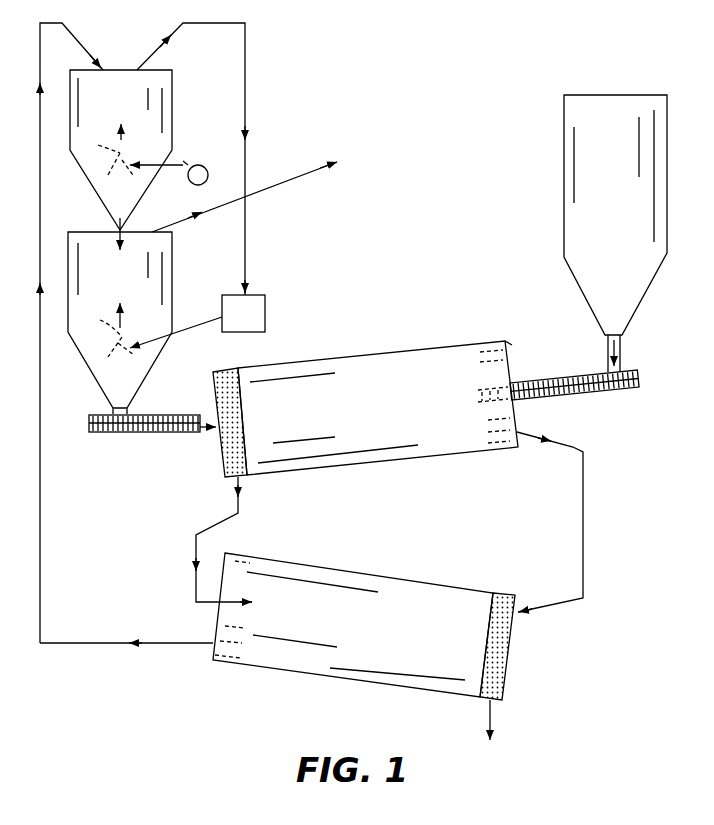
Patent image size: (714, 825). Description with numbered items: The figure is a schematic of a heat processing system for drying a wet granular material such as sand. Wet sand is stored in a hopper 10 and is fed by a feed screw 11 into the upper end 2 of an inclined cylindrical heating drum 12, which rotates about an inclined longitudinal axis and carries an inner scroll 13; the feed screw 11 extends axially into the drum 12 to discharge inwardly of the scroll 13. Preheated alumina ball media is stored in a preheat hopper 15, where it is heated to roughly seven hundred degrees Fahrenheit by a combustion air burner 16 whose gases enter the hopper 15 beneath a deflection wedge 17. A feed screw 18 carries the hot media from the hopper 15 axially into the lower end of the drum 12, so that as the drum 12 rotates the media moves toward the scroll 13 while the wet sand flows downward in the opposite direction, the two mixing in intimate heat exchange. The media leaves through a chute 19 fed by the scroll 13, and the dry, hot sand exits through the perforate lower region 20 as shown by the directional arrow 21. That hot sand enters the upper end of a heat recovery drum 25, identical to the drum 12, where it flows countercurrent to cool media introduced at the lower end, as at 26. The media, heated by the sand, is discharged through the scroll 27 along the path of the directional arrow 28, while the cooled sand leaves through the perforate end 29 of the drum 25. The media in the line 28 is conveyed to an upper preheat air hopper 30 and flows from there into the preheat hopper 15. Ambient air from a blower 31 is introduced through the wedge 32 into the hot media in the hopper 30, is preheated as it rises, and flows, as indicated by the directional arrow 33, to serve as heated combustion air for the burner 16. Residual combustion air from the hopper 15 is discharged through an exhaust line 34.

The upper end 2 is at (506, 343).
The hopper 10 is at (596, 212).
The feed screw 11 is at (573, 380).
The heating drum 12 is at (350, 412).
The inner scroll 13 is at (495, 360).
The preheat hopper 15 is at (102, 287).
The combustion air burner 16 is at (232, 325).
The deflection wedge 17 is at (104, 330).
The feed screw 18 is at (157, 432).
The chute 19 is at (567, 446).
The perforate lower region 20 is at (231, 440).
The directional arrow 21 is at (240, 500).
The heat recovery drum 25 is at (358, 632).
The media inlet 26 is at (521, 613).
The scroll 27 is at (235, 575).
The directional arrow / media line 28 is at (140, 636).
The perforate end 29 is at (498, 645).
The upper preheat air hopper 30 is at (104, 95).
The blower 31 is at (210, 166).
The wedge 32 is at (105, 150).
The directional arrow 33 is at (172, 33).
The exhaust line 34 is at (290, 178).